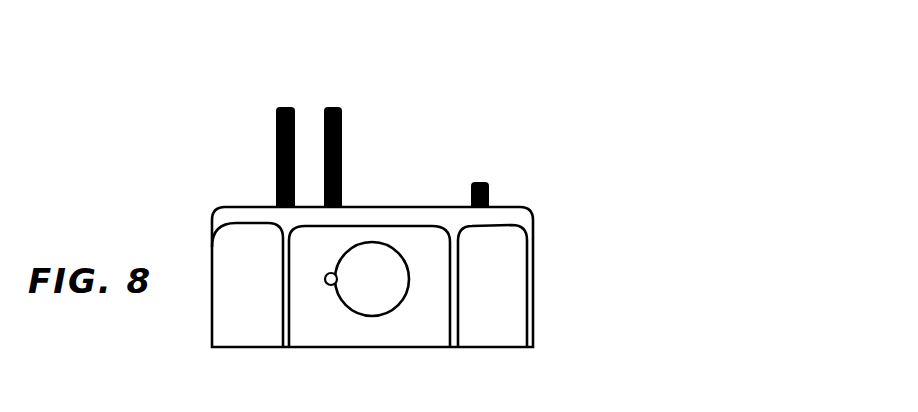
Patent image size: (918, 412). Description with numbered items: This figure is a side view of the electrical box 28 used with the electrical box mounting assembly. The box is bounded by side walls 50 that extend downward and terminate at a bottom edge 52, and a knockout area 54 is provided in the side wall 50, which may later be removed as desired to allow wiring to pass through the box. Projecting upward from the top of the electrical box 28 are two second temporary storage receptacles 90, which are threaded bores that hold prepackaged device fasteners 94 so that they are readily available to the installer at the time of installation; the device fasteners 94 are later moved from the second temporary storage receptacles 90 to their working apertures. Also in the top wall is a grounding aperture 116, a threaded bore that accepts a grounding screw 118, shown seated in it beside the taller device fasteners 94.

The electrical box 28 is at (609, 234).
The side walls 50 is at (515, 291).
The bottom edge 52 is at (490, 348).
The knockout areas 54 is at (389, 290).
The second temporary storage receptacles 90 is at (267, 202).
The device fastener 94 is at (284, 107).
The grounding aperture 116 is at (494, 197).
The grounding screw 118 is at (481, 182).